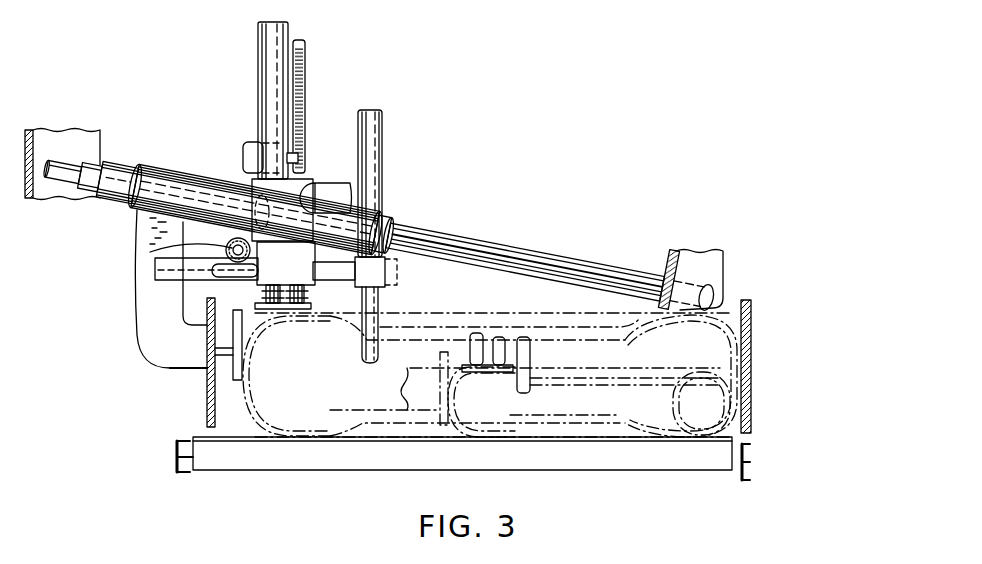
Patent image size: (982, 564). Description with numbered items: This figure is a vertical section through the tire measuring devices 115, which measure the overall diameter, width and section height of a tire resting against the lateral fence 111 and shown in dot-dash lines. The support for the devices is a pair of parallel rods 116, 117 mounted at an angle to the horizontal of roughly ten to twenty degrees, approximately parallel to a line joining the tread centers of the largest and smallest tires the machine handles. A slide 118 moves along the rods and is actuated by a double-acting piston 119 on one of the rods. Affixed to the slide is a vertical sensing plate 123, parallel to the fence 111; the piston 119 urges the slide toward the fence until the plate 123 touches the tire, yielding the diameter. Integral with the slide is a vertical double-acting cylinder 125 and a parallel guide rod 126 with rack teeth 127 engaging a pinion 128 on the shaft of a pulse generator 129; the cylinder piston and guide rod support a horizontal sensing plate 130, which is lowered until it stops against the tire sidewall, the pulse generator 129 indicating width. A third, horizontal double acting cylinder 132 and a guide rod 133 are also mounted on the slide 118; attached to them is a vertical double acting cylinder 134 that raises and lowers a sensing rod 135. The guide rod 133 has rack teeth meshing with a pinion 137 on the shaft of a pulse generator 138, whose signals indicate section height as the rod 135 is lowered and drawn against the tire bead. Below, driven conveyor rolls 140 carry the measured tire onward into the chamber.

The lateral fence 111 is at (755, 345).
The measuring devices 115 is at (322, 146).
The parallel rod 116 is at (544, 250).
The parallel rod 117 is at (581, 268).
The slide 118 is at (117, 196).
The double-acting piston 119 is at (102, 197).
The vertical sensing plate 123 is at (238, 368).
The vertical double-acting cylinder 125 is at (267, 34).
The guide rod 126 is at (303, 48).
The rack teeth 127 is at (300, 72).
The pinion 128 is at (300, 153).
The pulse generator 129 is at (243, 148).
The horizontal sensing plate 130 is at (282, 311).
The third double acting cylinder 132 is at (162, 275).
The guide rod 133 is at (218, 276).
The vertical double acting cylinder 134 is at (375, 146).
The sensing rod 135 is at (374, 316).
The pinion 137 is at (224, 250).
The pulse generator 138 is at (233, 243).
The driven conveyor rolls 140 is at (586, 458).